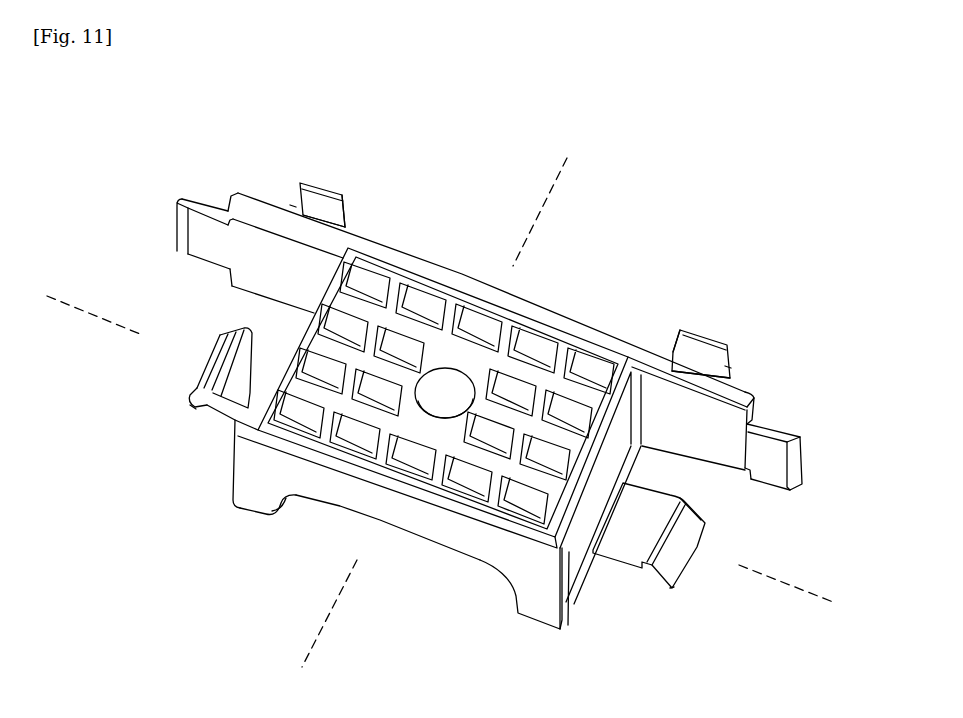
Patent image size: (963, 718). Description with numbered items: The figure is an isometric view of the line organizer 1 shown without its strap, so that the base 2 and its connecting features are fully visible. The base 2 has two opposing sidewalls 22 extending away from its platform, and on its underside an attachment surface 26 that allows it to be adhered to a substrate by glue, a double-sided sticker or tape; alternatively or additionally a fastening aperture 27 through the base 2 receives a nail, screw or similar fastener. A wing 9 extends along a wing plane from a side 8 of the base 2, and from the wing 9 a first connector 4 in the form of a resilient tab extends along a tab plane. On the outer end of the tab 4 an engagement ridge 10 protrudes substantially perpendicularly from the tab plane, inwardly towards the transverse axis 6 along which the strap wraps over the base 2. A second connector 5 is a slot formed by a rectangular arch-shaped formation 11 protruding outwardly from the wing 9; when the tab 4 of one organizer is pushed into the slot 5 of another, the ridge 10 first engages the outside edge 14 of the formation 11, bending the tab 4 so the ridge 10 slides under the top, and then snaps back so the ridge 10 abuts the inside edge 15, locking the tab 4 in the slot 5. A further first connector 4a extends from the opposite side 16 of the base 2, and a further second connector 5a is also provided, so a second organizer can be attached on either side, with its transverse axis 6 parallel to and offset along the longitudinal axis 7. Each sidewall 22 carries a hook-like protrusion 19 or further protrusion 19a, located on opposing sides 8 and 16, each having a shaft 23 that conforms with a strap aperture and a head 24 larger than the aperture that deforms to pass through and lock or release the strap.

The line organizer 1 is at (626, 176).
The base 2 is at (318, 488).
The first connector 4 is at (768, 425).
The further first connector 4a is at (202, 208).
The second connector 5 is at (675, 352).
The further second connector 5a is at (342, 227).
The transverse axis 6 is at (110, 318).
The longitudinal axis 7 is at (543, 203).
The side of the base 8 is at (153, 387).
The wing 9 is at (262, 207).
The engagement ridge 10 is at (177, 230).
The rectangular arch-shaped formation 11 is at (315, 188).
The outside edge 14 is at (292, 203).
The inside edge 15 is at (346, 207).
The opposite side of the base 16 is at (726, 603).
The protrusion 19 is at (690, 547).
The further protrusion 19a is at (205, 370).
The sidewalls 22 is at (250, 498).
The shaft 23 is at (240, 394).
The head 24 is at (193, 407).
The attachment surface 26 is at (502, 335).
The fastening aperture 27 is at (438, 407).